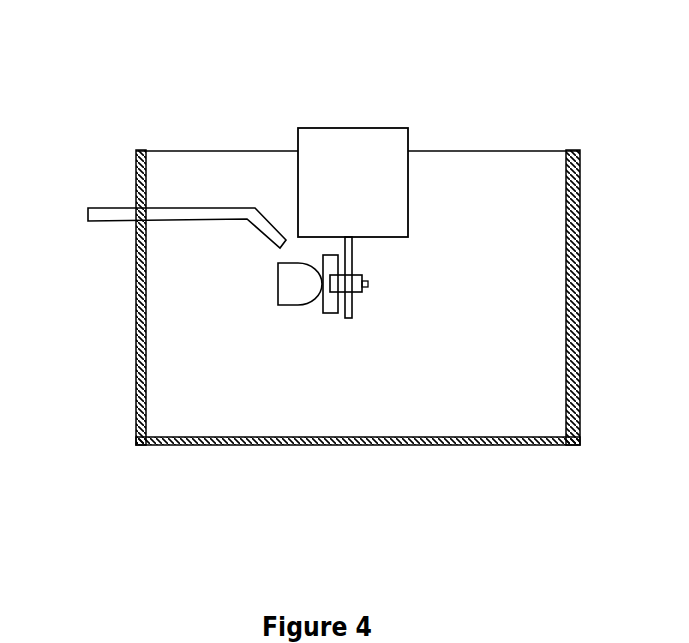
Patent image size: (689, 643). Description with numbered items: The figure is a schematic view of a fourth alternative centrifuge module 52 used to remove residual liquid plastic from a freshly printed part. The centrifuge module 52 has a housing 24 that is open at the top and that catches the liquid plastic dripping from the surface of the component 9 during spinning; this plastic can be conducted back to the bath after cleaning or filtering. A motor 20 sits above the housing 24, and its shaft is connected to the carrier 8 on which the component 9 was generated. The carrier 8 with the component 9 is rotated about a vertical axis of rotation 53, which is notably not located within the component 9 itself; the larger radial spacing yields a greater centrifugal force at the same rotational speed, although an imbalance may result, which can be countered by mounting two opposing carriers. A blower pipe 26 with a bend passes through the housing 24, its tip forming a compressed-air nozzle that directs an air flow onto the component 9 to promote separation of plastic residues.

The centrifuge module 52 is at (112, 92).
The housing 24 is at (573, 202).
The blower pipe 26 is at (177, 215).
The motor 20 is at (333, 155).
The axis of rotation 53 is at (348, 302).
The component 9 is at (292, 283).
The carrier 8 is at (335, 282).